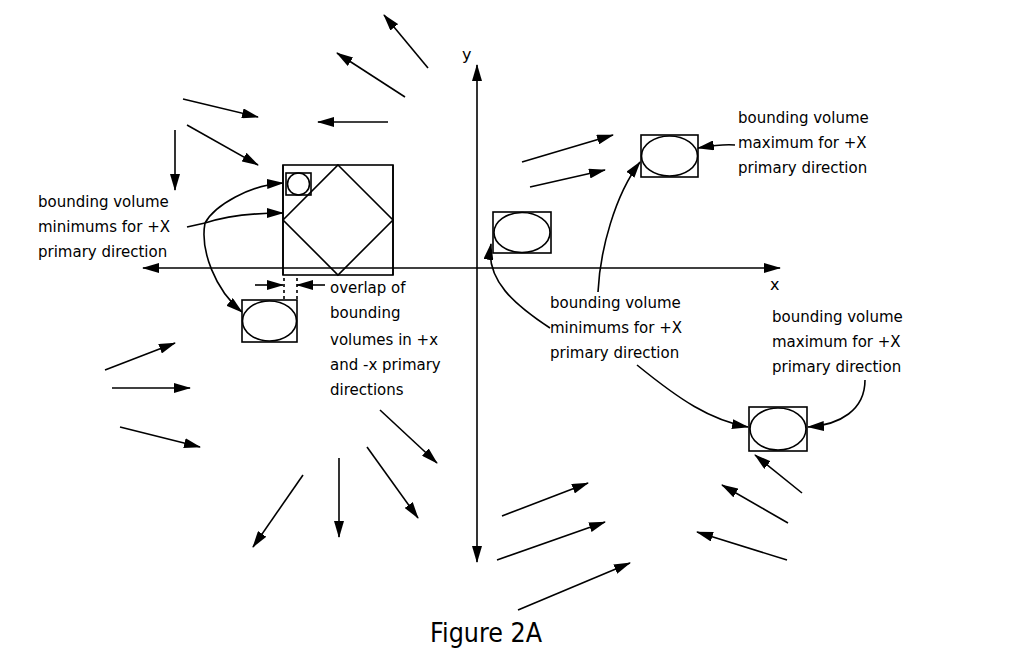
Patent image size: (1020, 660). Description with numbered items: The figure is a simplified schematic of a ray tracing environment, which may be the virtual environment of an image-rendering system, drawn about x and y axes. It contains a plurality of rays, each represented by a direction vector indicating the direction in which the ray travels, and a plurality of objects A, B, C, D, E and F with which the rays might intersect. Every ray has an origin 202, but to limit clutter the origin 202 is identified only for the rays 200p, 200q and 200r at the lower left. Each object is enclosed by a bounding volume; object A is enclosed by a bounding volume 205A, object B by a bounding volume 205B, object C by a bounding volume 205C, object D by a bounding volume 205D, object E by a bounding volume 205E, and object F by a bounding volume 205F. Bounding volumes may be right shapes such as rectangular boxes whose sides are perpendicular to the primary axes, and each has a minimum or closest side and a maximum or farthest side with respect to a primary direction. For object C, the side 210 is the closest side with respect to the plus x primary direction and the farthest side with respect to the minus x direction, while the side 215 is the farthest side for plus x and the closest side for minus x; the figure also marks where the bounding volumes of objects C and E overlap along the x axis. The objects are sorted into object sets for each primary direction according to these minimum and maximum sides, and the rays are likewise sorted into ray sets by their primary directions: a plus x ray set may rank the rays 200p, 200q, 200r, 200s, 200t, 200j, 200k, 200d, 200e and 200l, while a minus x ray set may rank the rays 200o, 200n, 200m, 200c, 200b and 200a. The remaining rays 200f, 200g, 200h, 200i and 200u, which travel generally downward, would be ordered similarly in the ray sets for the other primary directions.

The ray 200a is at (353, 133).
The ray 200b is at (371, 76).
The ray 200c is at (414, 41).
The ray 200d is at (567, 146).
The ray 200e is at (567, 187).
The ray 200f is at (281, 511).
The ray 200g is at (362, 497).
The ray 200h is at (406, 482).
The ray 200i is at (409, 436).
The ray 200j is at (545, 503).
The ray 200k is at (551, 542).
The ray 200l is at (574, 587).
The ray 200m is at (742, 552).
The ray 200n is at (755, 508).
The ray 200o is at (791, 474).
The ray 200p is at (131, 353).
The ray 200q is at (151, 400).
The ray 200r is at (160, 446).
The ray 200s is at (238, 98).
The ray 200t is at (234, 145).
The ray 200u is at (199, 160).
The origin 202 is at (132, 401).
The bounding volume 205A is at (695, 135).
The bounding volume 205B is at (805, 407).
The bounding volume 205C is at (338, 220).
The bounding volume 205D is at (540, 212).
The bounding volume 205E is at (293, 342).
The bounding volume 205F is at (289, 173).
The side 210 is at (283, 239).
The side 215 is at (393, 230).